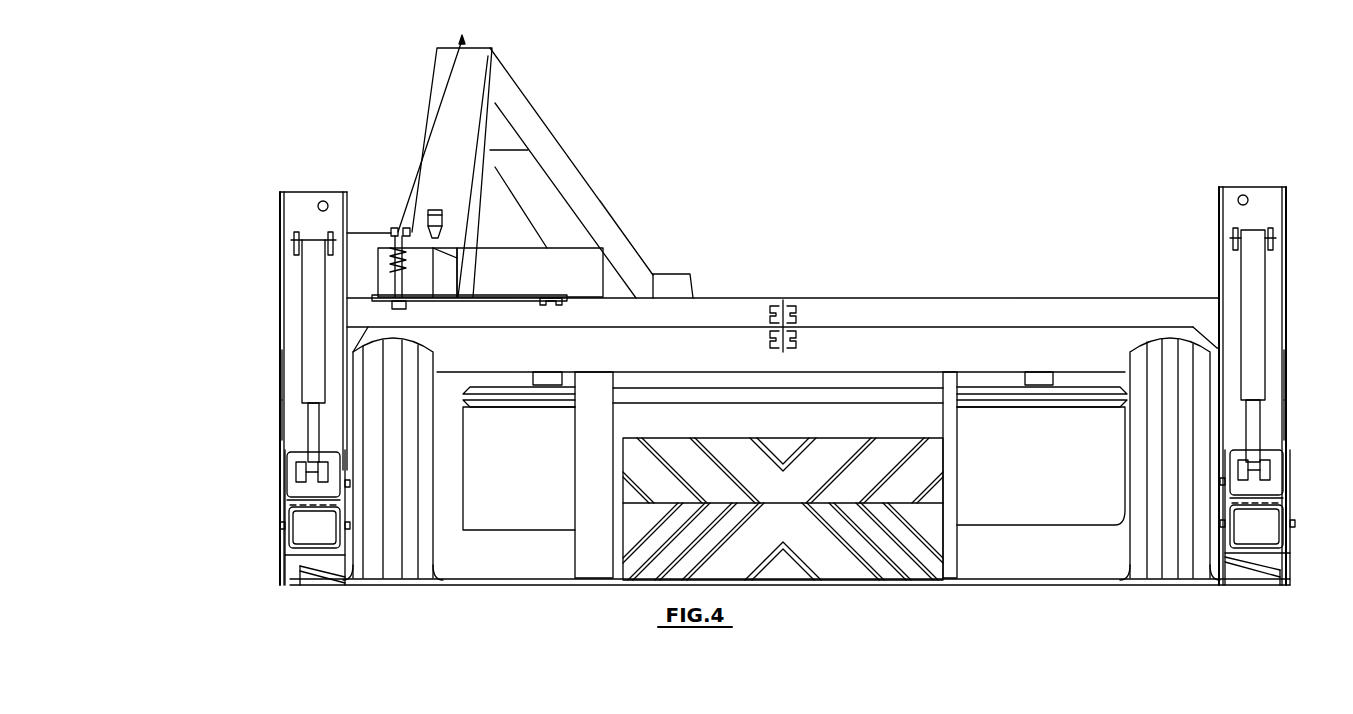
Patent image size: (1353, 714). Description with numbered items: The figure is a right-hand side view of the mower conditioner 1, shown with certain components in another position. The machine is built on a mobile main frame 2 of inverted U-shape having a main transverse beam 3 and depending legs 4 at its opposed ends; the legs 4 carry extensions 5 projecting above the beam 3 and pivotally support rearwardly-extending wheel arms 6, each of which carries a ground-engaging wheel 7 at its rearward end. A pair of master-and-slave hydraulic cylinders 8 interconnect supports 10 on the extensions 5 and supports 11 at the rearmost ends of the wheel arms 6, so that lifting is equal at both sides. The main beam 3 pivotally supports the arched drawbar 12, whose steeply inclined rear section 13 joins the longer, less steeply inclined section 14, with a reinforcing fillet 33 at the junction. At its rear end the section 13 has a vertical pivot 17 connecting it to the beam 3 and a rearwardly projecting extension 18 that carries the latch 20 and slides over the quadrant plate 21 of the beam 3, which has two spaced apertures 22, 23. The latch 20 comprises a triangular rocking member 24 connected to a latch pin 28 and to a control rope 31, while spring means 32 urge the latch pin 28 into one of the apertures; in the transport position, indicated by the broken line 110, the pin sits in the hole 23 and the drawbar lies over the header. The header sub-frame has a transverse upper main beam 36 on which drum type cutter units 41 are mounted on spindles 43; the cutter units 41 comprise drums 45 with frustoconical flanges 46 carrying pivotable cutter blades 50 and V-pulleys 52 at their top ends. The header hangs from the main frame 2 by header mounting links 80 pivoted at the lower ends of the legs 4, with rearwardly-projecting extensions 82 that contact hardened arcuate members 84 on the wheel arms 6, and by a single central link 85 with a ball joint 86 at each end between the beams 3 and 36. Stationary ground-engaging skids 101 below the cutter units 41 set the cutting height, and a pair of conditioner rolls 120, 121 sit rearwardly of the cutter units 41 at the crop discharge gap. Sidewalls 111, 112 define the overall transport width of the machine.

The mower conditioner 1 is at (1087, 242).
The mobile main frame 2 is at (944, 298).
The main transverse beam 3 is at (988, 298).
The depending legs 4 is at (280, 405).
The extensions 5 is at (280, 275).
The wheel arms 6 is at (287, 468).
The ground-engaging wheel 7 is at (433, 528).
The hydraulic cylinders 8 is at (302, 320).
The supports 10 is at (332, 232).
The supports 11 is at (320, 470).
The arched drawbar 12 is at (550, 127).
The rear section 13 is at (433, 82).
The forwardly and downwardly inclined section 14 is at (601, 199).
The vertical pivot 17 is at (430, 210).
The extension 18 is at (414, 222).
The latch 20 is at (395, 232).
The quadrant plate 21 is at (530, 303).
The aperture 22 is at (552, 298).
The aperture 23 is at (408, 309).
The triangular rocking member 24 is at (405, 227).
The latch pin 28 is at (405, 288).
The control rope 31 is at (437, 116).
The spring means 32 is at (405, 268).
The reinforcing fillet 33 is at (513, 153).
The transverse upper main beam 36 is at (878, 372).
The drum type cutter units 41 is at (465, 450).
The spindles 43 is at (563, 380).
The drums 45 is at (466, 483).
The frustoconical flanges 46 is at (318, 575).
The cutter blades 50 is at (320, 580).
The V-pulleys 52 is at (468, 390).
The header mounting links 80 is at (305, 545).
The rearwardly-projecting extensions 82 is at (310, 550).
The hardened arcuate members 84 is at (290, 505).
The central link 85 is at (790, 327).
The ball joint 86 is at (781, 307).
The ground-engaging skids 101 is at (345, 583).
The broken line 110 is at (627, 231).
The sidewall 111 is at (280, 368).
The sidewall 112 is at (1287, 383).
The conditioner roll 120 is at (935, 436).
The conditioner roll 121 is at (935, 583).